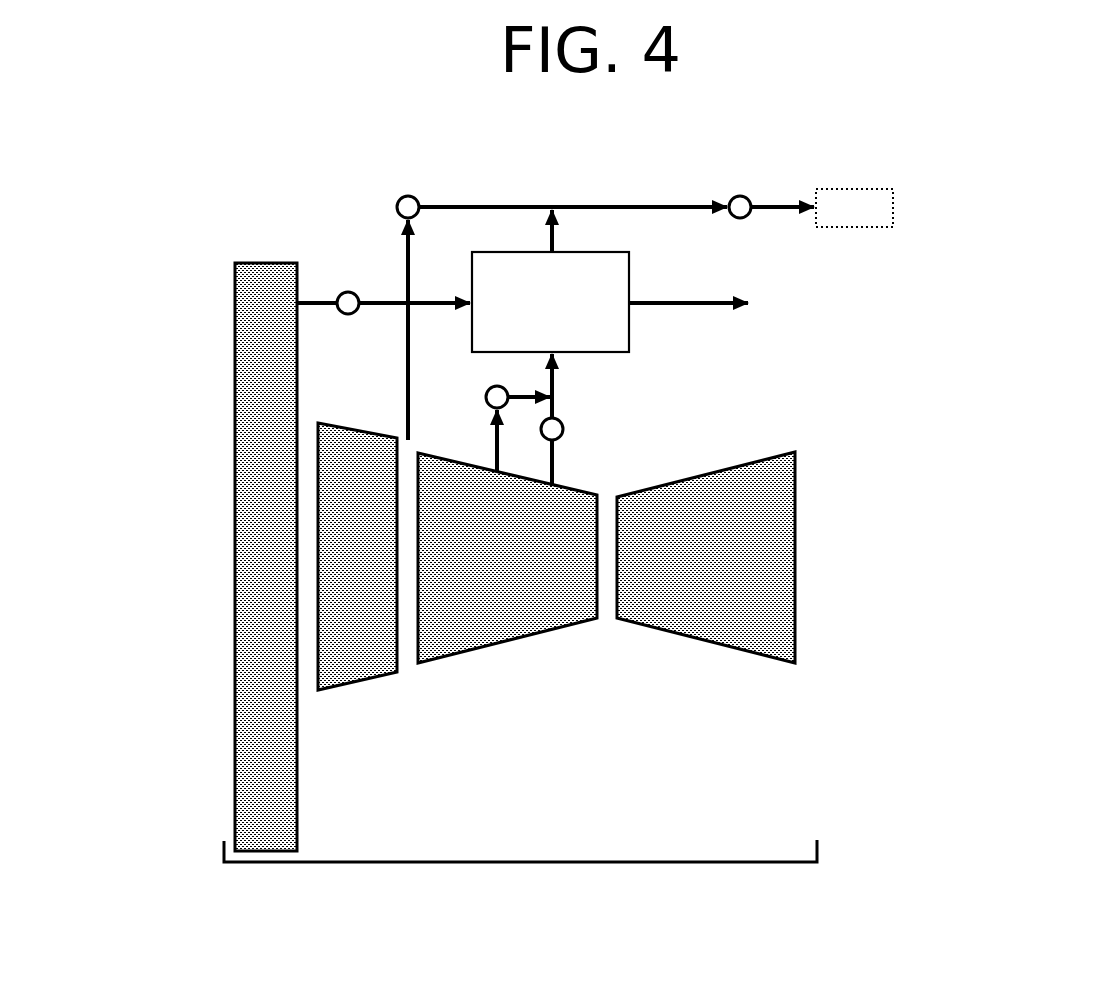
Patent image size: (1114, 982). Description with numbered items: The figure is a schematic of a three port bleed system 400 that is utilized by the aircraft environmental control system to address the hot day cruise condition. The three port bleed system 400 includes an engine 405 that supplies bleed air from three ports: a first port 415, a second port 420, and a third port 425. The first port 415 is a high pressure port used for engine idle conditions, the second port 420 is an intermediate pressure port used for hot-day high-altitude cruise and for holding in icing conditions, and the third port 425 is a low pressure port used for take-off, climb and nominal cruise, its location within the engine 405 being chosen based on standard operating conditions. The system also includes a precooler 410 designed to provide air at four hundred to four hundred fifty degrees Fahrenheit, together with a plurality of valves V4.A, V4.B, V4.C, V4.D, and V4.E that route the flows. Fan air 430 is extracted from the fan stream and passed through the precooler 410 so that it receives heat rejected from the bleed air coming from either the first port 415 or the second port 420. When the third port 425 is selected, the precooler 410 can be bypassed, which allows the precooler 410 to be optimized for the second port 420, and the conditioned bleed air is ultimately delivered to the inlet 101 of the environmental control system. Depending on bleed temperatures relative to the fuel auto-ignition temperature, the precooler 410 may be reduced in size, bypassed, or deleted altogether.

The three port bleed system 400 is at (1112, 102).
The engine 405 is at (817, 862).
The precooler 410 is at (570, 314).
The first port 415 is at (560, 482).
The second port 420 is at (485, 461).
The third port 425 is at (391, 433).
The fan air 430 is at (302, 290).
The inlet 101 is at (854, 208).
The valve V4.A is at (563, 427).
The valve V4.B is at (488, 388).
The valve V4.C is at (352, 313).
The valve V4.D is at (397, 200).
The valve V4.E is at (730, 198).